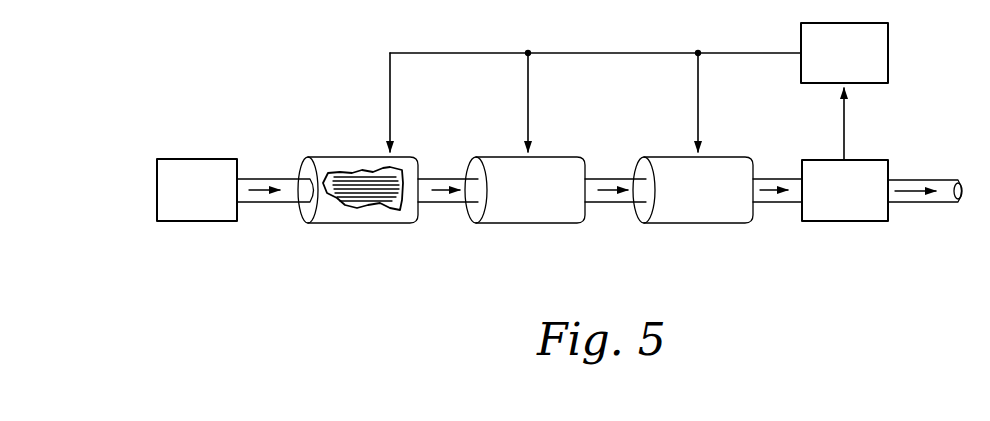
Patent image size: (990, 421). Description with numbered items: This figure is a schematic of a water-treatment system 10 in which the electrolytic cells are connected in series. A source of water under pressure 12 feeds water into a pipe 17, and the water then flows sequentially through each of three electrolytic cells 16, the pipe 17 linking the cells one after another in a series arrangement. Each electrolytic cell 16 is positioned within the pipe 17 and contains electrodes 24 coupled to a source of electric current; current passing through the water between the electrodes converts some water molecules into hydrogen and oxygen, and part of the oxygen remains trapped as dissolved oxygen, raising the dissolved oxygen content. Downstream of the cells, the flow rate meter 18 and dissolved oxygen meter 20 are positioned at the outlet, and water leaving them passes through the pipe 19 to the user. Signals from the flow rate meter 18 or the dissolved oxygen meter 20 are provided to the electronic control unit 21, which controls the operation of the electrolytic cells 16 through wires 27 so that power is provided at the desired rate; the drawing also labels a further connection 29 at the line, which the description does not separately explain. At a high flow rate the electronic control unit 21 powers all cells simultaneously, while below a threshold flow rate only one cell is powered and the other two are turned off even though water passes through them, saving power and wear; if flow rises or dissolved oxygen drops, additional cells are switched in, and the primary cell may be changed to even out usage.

The exhaust system 10 is at (303, 86).
The source of water under pressure 12 is at (193, 159).
The electrolytic cell 16 is at (353, 224).
The pipe 17 is at (437, 203).
The flow rate meter 18 is at (817, 217).
The dissolved oxygen meter 20 is at (840, 222).
The pipe 19 is at (930, 180).
The electronic control unit 21 is at (888, 55).
The electrodes 24 is at (358, 190).
The wires 27 is at (427, 172).
The sensor location 29 is at (462, 172).